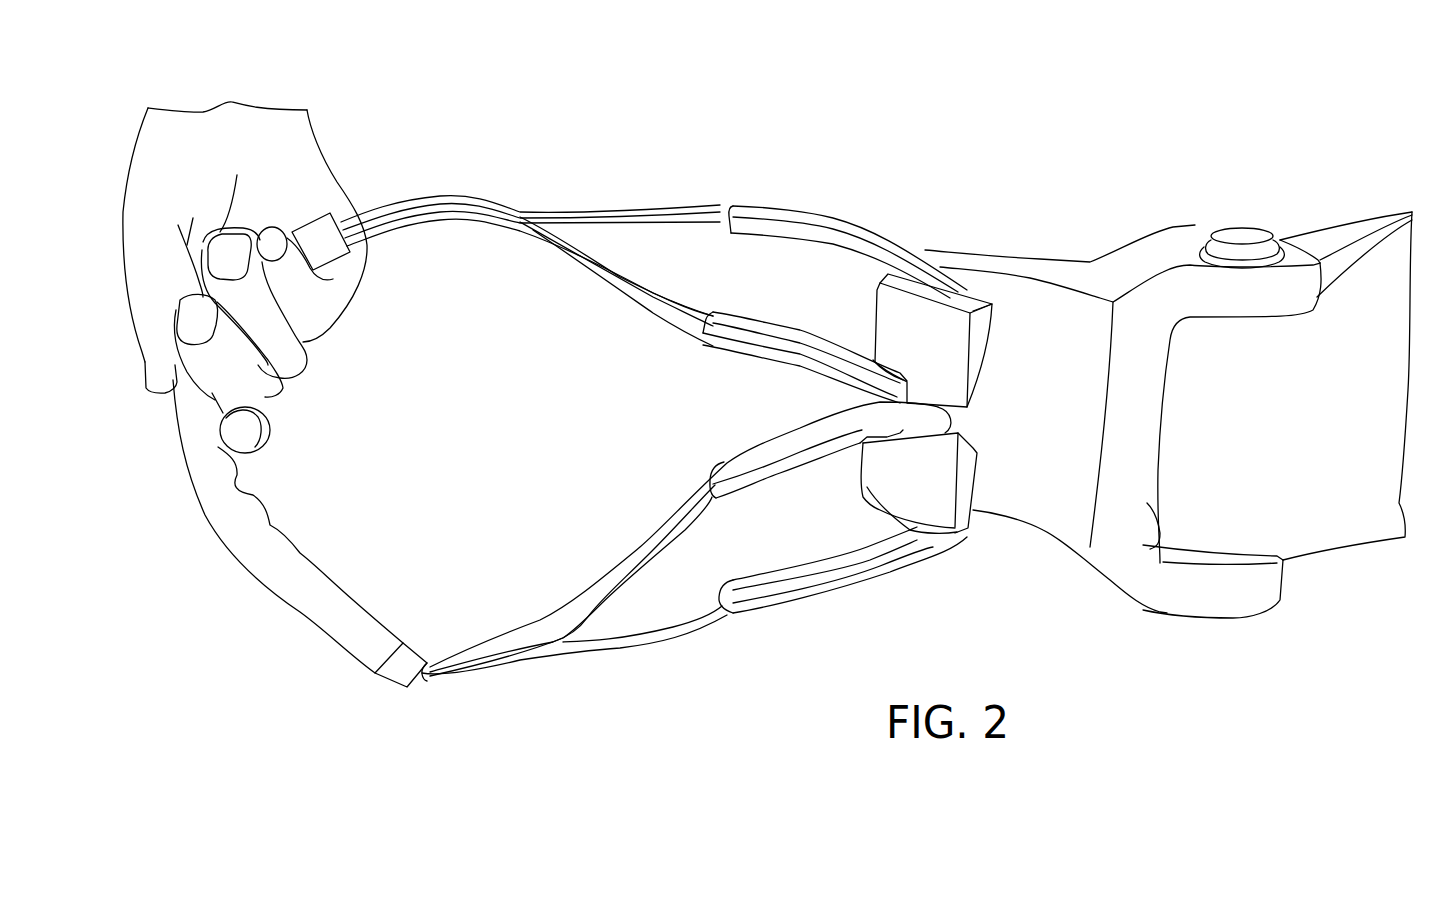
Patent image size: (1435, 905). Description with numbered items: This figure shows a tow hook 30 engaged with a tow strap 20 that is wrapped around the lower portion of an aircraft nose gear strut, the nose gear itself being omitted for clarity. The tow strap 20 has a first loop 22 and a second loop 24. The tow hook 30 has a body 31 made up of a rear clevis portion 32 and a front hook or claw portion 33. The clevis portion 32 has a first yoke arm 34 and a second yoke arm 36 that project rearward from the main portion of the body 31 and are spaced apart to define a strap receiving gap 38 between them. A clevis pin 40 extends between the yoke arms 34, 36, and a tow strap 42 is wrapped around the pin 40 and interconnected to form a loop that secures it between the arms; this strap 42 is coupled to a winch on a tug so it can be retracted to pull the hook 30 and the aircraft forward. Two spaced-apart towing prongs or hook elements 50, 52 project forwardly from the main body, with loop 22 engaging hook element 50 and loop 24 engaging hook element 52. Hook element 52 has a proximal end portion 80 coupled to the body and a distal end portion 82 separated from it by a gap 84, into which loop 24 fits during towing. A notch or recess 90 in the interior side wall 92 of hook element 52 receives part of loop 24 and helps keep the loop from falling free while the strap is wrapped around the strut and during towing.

The tow strap 20 is at (736, 573).
The first loop 22 is at (818, 603).
The second loop 24 is at (823, 223).
The tow hook 30 is at (1123, 433).
The body 31 is at (1073, 537).
The clevis portion 32 is at (1270, 632).
The hook or claw portion 33 is at (858, 467).
The first yoke arm 34 is at (1223, 634).
The second yoke arm 36 is at (1178, 240).
The strap receiving gap 38 is at (1160, 560).
The clevis pin 40 is at (1243, 233).
The tow strap 42 is at (1307, 498).
The first hook element 50 is at (920, 500).
The second hook element 52 is at (931, 327).
The proximal end portion 80 is at (958, 300).
The distal end portion 82 is at (978, 357).
The gap 84 is at (936, 292).
The notch or recess 90 is at (877, 369).
The interior side wall 92 is at (946, 409).